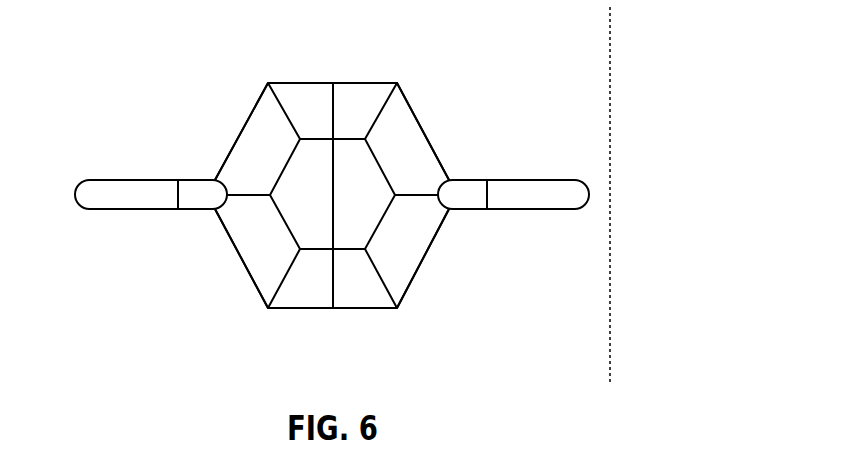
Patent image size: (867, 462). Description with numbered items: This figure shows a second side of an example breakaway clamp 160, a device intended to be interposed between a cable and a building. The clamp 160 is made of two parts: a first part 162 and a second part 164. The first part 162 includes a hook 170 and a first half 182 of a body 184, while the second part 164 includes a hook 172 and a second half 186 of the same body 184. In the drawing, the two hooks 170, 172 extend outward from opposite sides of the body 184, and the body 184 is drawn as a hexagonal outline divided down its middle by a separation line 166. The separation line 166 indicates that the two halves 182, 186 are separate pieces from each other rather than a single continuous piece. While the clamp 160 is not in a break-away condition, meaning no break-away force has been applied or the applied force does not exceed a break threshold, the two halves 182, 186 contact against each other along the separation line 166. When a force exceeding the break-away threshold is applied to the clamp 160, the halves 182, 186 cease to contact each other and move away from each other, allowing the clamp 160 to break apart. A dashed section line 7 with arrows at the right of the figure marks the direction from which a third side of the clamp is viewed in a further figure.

The breakaway clamp 160 is at (122, 39).
The first part/portion 162 is at (228, 112).
The second part/portion 164 is at (369, 63).
The separation line 166 is at (333, 281).
The hook 170 is at (102, 192).
The hook 172 is at (515, 193).
The first half 182 is at (248, 250).
The body 184 is at (302, 322).
The second half 186 is at (407, 252).
The line 7- 7 is at (610, 7).